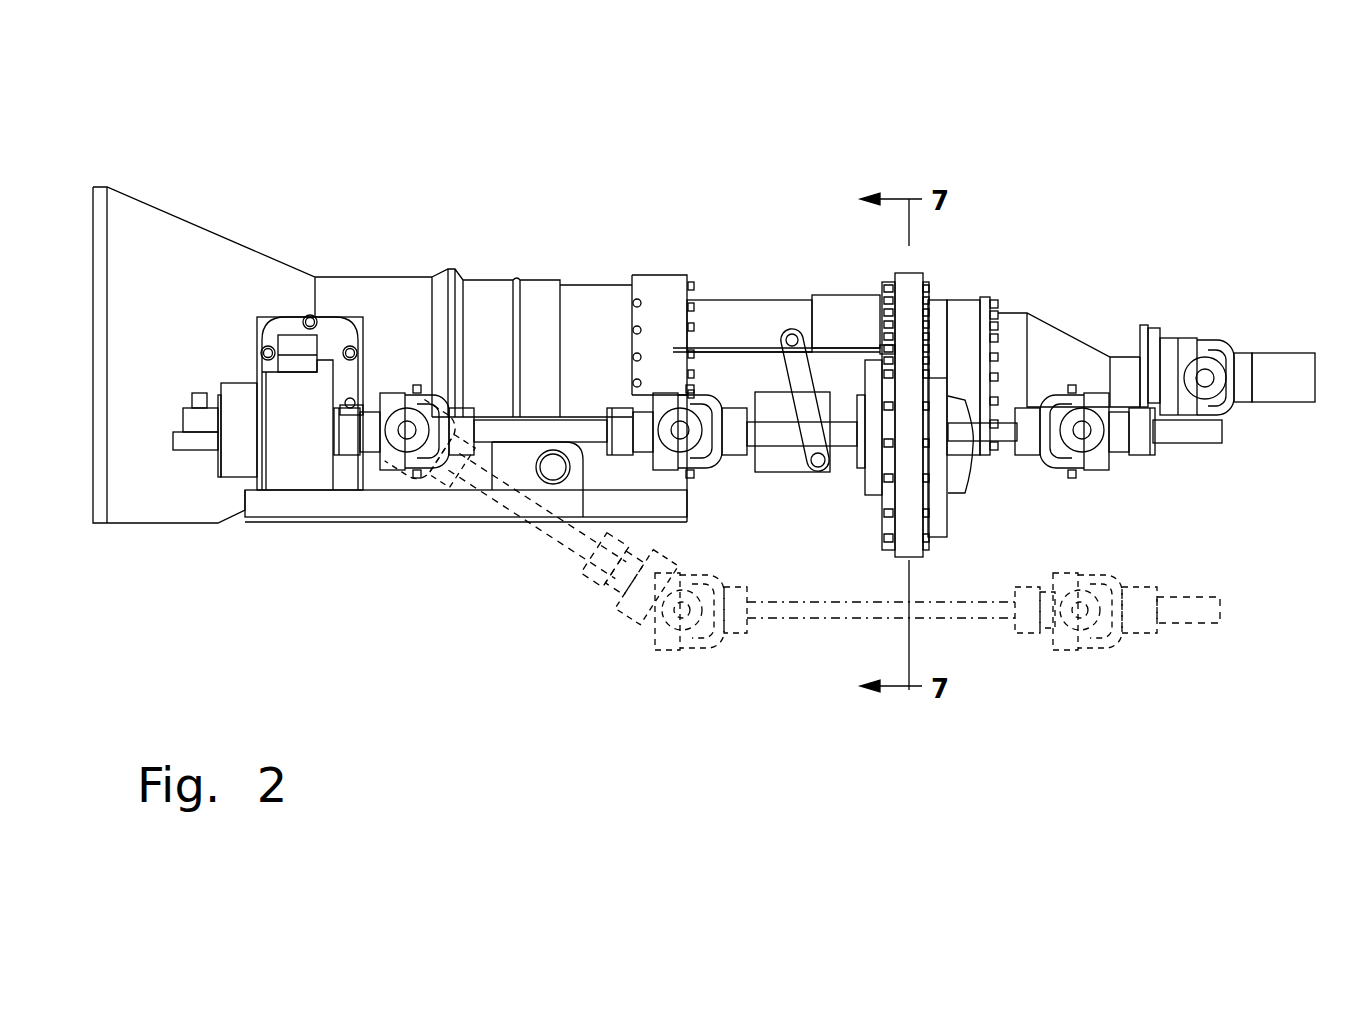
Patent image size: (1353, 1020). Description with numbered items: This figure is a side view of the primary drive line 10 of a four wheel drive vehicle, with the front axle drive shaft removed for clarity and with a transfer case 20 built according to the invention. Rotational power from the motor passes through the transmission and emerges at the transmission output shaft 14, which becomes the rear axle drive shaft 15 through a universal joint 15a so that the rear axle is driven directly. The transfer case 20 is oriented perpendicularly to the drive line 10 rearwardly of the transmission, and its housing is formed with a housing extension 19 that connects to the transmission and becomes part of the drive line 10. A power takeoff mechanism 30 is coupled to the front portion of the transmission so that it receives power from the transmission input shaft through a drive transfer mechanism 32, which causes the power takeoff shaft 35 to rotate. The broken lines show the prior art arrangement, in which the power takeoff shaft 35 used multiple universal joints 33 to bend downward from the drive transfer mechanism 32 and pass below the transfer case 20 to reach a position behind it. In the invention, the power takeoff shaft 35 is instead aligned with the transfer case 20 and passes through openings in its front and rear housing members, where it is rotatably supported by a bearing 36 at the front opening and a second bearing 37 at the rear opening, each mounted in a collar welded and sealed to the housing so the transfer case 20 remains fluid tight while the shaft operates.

The primary drive line 10 is at (597, 225).
The transmission output shaft 14 is at (1123, 362).
The rear axle drive shaft 15 is at (1290, 357).
The universal joint 15a is at (1207, 353).
The housing extension 19 is at (752, 306).
The transfer case 20 is at (908, 562).
The power takeoff mechanism 30 is at (250, 579).
The drive transfer mechanism 32 is at (307, 476).
The universal joints 33 is at (417, 470).
The power takeoff shaft 35 is at (510, 438).
The bearing 36 is at (853, 420).
The second bearing 37 is at (972, 463).